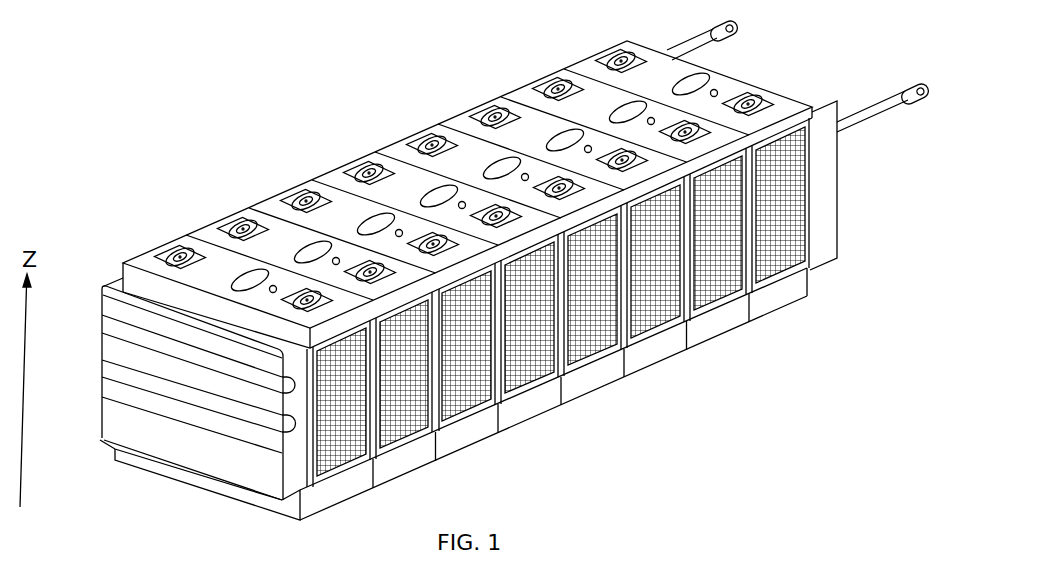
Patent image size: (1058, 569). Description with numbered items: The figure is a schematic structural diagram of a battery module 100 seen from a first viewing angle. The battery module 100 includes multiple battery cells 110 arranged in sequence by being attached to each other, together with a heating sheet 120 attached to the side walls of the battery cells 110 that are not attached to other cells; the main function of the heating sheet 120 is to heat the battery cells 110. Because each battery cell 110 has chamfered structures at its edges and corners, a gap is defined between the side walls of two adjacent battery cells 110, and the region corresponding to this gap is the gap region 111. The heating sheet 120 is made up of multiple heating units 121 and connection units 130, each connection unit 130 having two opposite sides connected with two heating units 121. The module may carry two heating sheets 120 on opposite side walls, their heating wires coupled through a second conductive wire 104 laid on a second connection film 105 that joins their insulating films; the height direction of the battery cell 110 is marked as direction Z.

The battery module 100 is at (373, 99).
The battery cell 110 is at (567, 63).
The gap region 111 is at (742, 297).
The second conductive wire 104 is at (100, 373).
The second connection film 105 is at (100, 430).
The heating sheet 120 is at (420, 452).
The heating unit 121 is at (473, 408).
The connection unit 130 is at (501, 378).